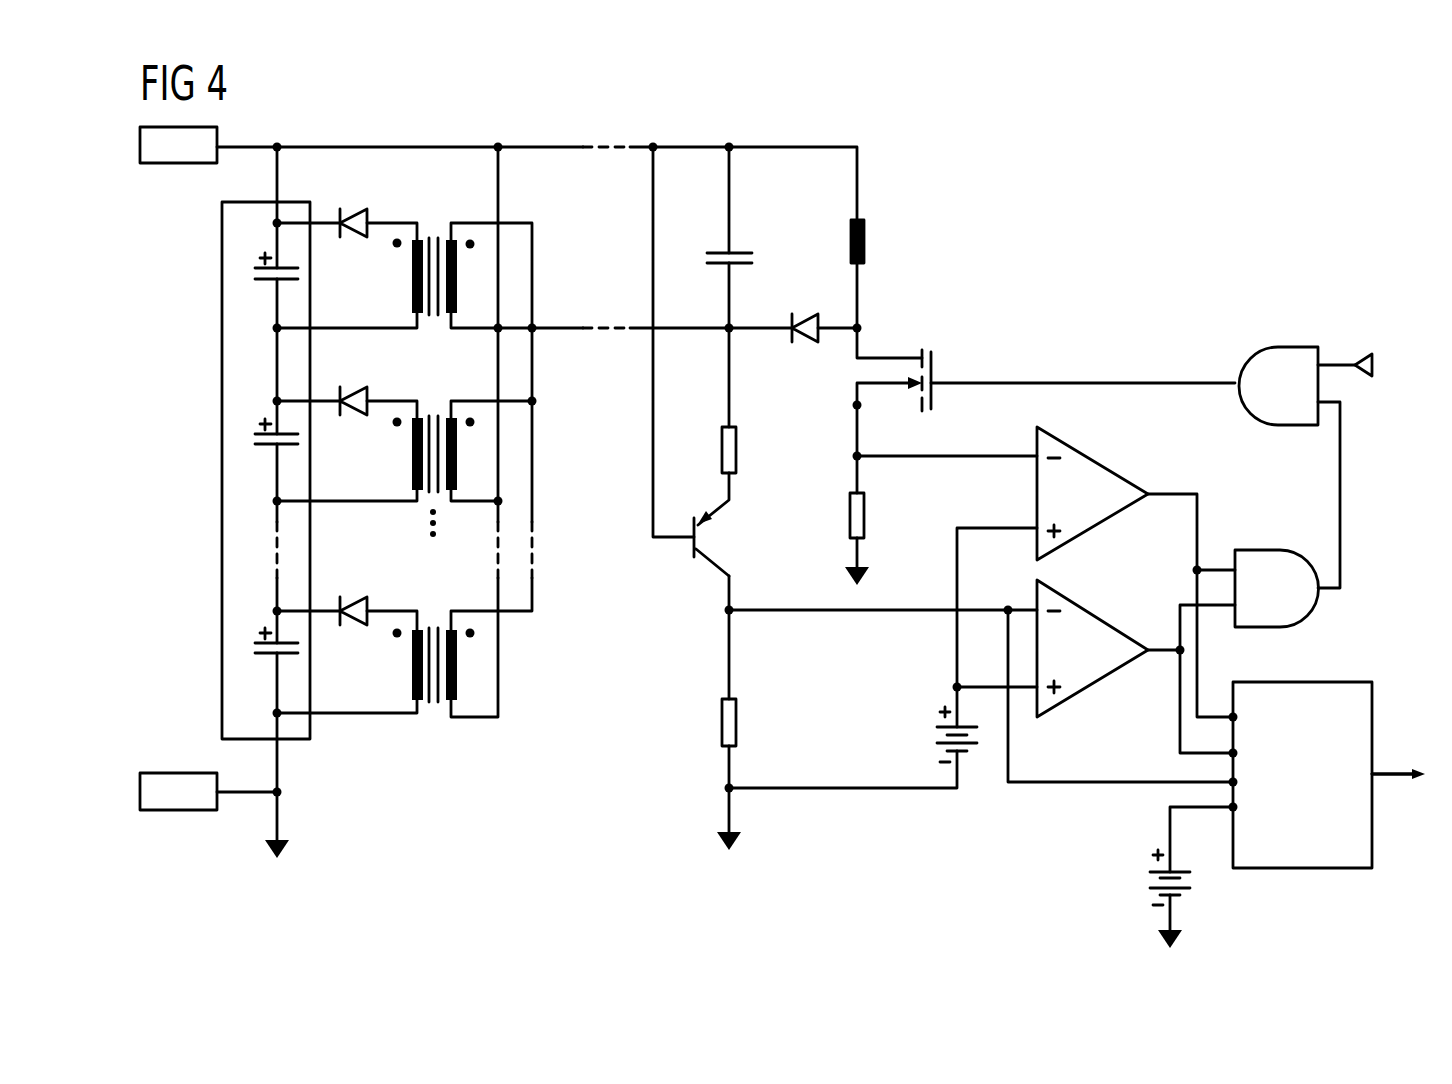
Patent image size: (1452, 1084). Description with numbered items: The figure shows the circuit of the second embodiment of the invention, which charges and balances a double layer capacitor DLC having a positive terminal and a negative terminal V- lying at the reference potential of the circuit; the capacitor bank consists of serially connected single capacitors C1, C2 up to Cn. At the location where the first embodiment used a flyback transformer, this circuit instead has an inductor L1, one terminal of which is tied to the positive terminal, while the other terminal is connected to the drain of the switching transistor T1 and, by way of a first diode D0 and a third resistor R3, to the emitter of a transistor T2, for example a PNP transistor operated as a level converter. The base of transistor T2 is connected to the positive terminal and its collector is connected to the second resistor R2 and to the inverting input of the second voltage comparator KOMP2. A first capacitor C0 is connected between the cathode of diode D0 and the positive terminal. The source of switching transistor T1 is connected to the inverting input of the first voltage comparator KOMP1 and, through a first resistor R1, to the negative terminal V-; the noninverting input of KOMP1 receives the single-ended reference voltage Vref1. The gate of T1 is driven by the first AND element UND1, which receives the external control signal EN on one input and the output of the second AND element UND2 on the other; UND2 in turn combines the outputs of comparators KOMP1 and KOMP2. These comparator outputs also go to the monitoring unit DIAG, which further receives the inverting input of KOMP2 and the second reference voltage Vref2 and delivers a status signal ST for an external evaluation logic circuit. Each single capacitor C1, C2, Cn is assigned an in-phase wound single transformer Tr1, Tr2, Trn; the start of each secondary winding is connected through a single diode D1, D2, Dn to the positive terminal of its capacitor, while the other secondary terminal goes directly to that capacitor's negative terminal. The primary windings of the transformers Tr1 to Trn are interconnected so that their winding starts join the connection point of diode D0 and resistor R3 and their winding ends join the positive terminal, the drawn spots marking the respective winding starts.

The negative terminal V- is at (178, 791).
The double layer capacitor DLC is at (222, 445).
The single capacitor C1 is at (274, 284).
The single capacitor C2 is at (274, 448).
The single capacitor Cn is at (274, 659).
The single diode D1 is at (356, 240).
The single diode D2 is at (356, 418).
The single diode Dn is at (356, 628).
The single transformer Tr1 is at (435, 238).
The single transformer Tr2 is at (435, 418).
The single transformer Trn is at (435, 628).
The first capacitor C0 is at (756, 258).
The inductor L1 is at (866, 245).
The first diode D0 is at (797, 348).
The switching transistor T1 is at (934, 369).
The transistor T2 is at (690, 545).
The first resistor R1 is at (866, 518).
The second resistor R2 is at (737, 722).
The third resistor R3 is at (737, 452).
The first voltage comparator KOMP1 is at (1092, 493).
The second voltage comparator KOMP2 is at (1092, 648).
The first AND element UND1 is at (1278, 386).
The second AND element UND2 is at (1277, 588).
The control signal EN is at (1383, 370).
The monitoring unit DIAG is at (1302, 775).
The status signal ST is at (1406, 756).
The single-ended reference voltage Vref1 is at (924, 734).
The second single-ended reference voltage Vref2 is at (1135, 877).